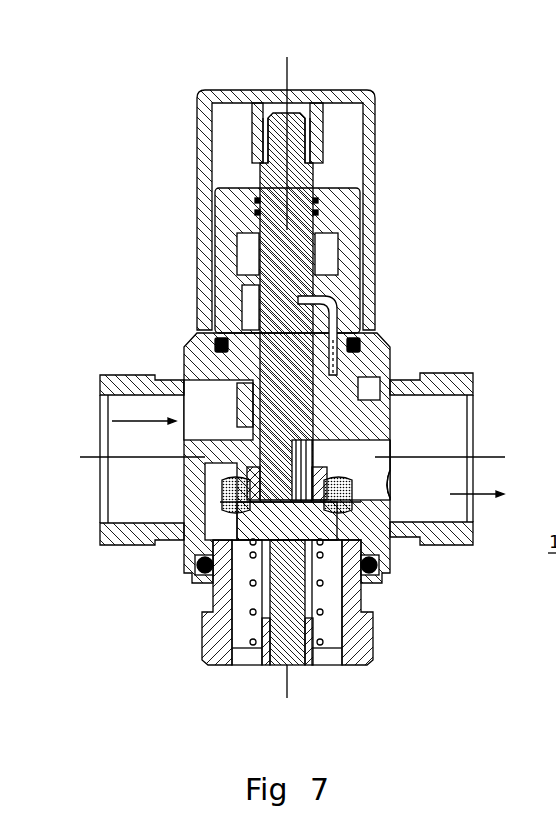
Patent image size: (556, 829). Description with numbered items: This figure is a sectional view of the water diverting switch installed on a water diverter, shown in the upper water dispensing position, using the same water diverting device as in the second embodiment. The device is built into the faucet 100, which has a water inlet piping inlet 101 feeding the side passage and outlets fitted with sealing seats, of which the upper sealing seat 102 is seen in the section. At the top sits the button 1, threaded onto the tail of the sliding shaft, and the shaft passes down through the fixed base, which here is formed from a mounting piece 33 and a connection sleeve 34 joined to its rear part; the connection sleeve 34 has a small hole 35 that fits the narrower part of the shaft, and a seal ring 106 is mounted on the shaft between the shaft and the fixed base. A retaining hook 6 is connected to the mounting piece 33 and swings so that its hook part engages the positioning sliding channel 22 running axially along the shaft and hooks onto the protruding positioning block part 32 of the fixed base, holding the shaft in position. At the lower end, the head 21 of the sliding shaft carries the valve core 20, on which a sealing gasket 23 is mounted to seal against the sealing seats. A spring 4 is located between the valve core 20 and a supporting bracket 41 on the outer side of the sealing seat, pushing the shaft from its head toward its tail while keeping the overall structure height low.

The button 1 is at (378, 118).
The small hole 35 is at (322, 185).
The seal ring 106 is at (328, 202).
The connection sleeve 34 is at (358, 253).
The mounting piece 33 is at (213, 340).
The retaining hook 6 is at (360, 340).
The protruding positioning block part 32 is at (305, 440).
The positioning sliding channel 22 is at (392, 475).
The water inlet piping inlet 101 is at (187, 427).
The upper sealing seat 102 is at (205, 507).
The faucet 100 is at (443, 547).
The sealing gasket 23 is at (225, 483).
The valve core 20 is at (262, 548).
The head of the sliding shaft 21 is at (388, 577).
The spring 4 is at (208, 665).
The supporting bracket 41 is at (332, 665).